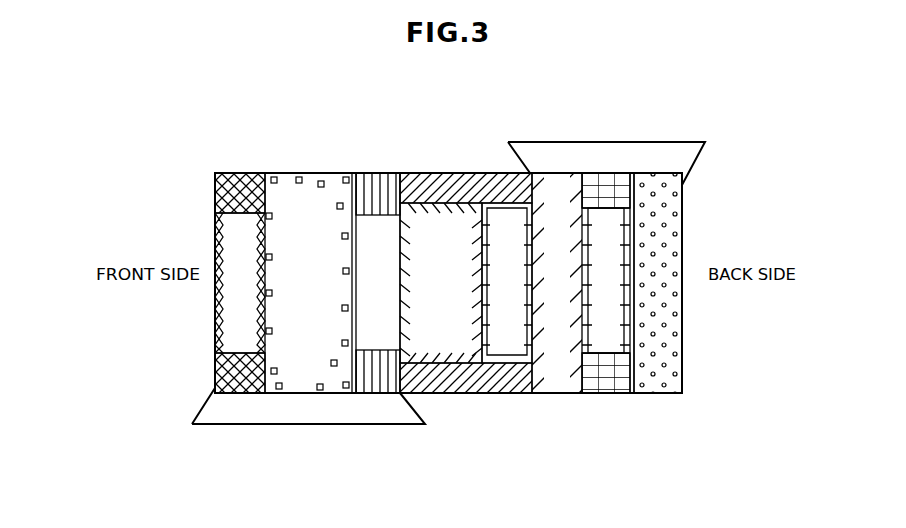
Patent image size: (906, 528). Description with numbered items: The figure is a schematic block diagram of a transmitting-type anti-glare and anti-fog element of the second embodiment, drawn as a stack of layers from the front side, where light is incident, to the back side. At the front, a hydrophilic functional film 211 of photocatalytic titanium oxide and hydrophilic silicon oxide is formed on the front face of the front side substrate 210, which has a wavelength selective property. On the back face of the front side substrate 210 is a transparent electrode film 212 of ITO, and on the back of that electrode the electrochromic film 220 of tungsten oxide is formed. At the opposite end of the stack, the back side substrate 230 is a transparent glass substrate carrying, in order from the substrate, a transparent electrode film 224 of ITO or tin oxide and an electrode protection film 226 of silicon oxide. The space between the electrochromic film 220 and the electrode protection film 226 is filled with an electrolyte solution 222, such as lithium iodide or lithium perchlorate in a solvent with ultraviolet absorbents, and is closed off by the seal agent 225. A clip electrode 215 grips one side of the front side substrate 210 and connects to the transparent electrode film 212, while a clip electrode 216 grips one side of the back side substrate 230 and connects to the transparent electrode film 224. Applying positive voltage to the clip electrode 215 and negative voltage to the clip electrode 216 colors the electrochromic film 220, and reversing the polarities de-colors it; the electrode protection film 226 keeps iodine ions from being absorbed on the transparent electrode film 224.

The hydrophilic functional film 211 is at (249, 393).
The front side substrate 210 is at (308, 393).
The transparent electrode film 212 is at (377, 393).
The electrochromic film 220 is at (445, 197).
The electrolyte solution 222 is at (503, 207).
The seal agent 225 is at (472, 393).
The electrode protection film 226 is at (557, 393).
The transparent electrode film 224 is at (600, 393).
The back side substrate 230 is at (652, 393).
The clip electrode 215 is at (212, 402).
The clip electrode 216 is at (688, 152).